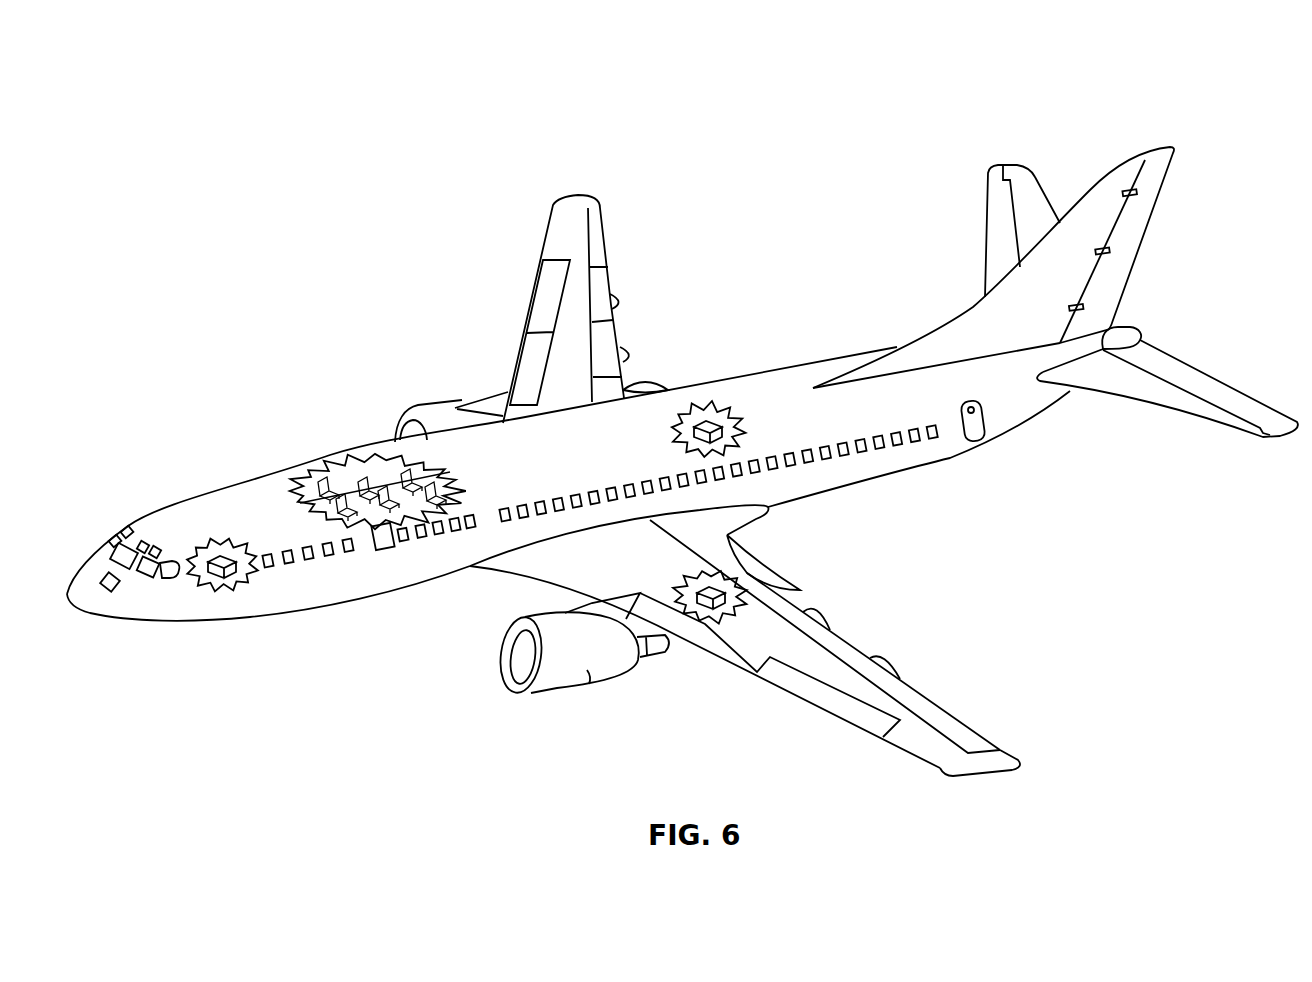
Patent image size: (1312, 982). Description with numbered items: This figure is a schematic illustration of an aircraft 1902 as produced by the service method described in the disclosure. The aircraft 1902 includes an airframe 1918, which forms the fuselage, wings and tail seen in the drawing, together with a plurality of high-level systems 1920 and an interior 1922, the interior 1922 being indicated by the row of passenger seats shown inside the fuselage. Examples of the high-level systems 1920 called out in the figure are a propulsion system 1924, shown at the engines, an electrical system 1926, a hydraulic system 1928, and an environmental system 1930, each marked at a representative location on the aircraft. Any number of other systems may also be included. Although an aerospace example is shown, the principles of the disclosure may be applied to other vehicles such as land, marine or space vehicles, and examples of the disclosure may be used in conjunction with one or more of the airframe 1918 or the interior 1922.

The aircraft 1902 is at (186, 340).
The airframe 1918 is at (325, 451).
The high-level systems 1920 is at (1053, 593).
The interior 1922 is at (357, 520).
The propulsion system 1924 is at (437, 410).
The electrical system 1926 is at (217, 553).
The hydraulic system 1928 is at (710, 590).
The environmental system 1930 is at (702, 425).